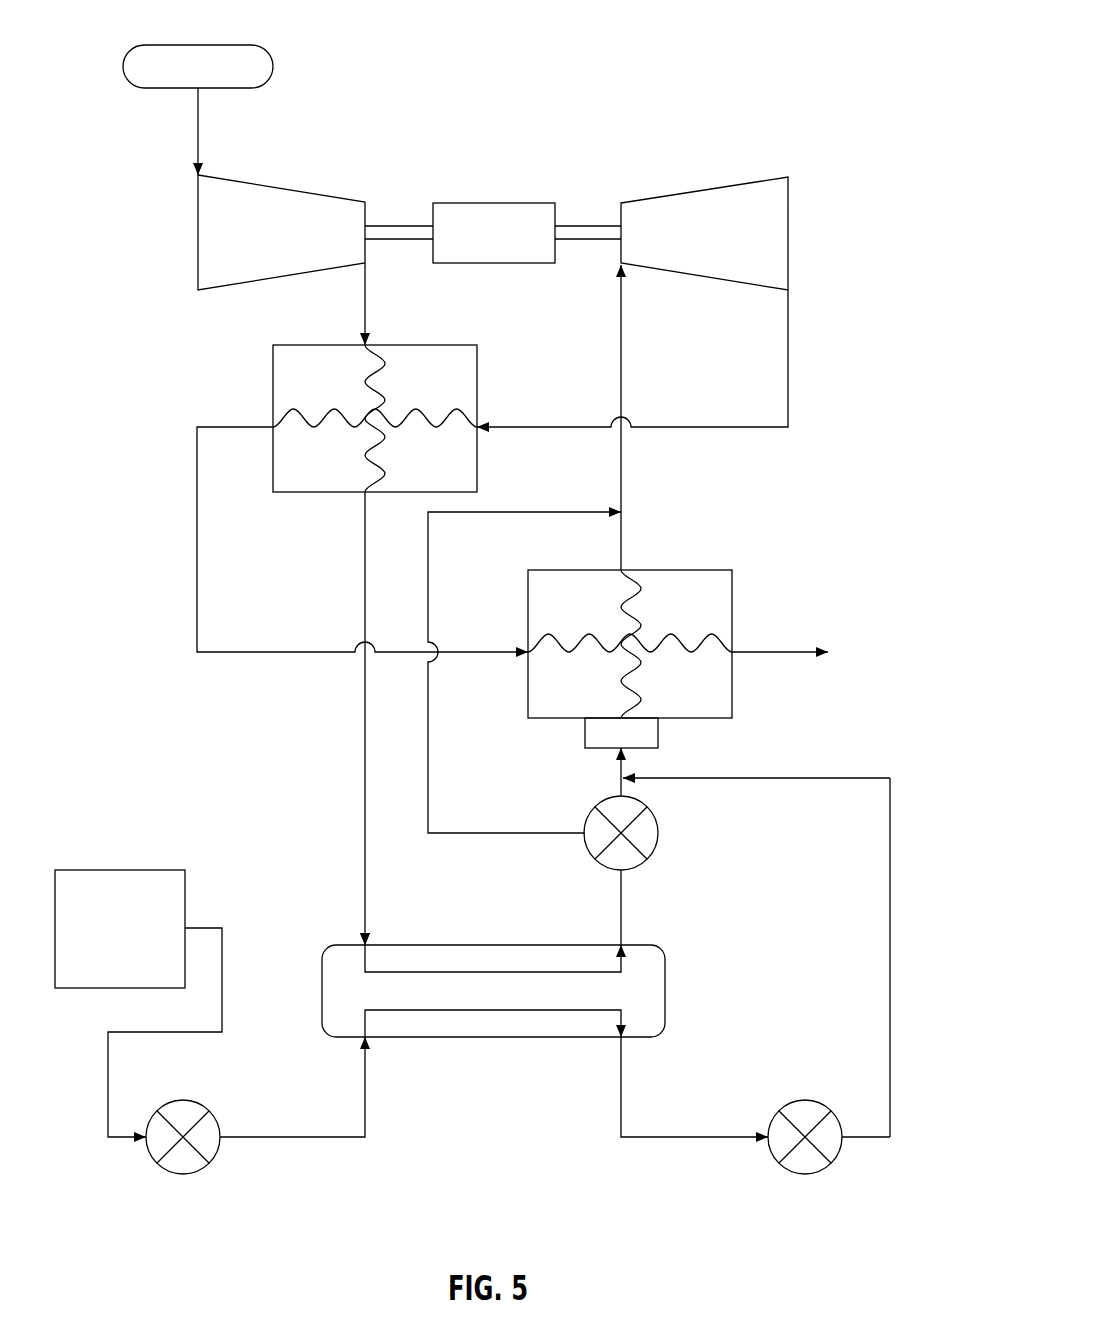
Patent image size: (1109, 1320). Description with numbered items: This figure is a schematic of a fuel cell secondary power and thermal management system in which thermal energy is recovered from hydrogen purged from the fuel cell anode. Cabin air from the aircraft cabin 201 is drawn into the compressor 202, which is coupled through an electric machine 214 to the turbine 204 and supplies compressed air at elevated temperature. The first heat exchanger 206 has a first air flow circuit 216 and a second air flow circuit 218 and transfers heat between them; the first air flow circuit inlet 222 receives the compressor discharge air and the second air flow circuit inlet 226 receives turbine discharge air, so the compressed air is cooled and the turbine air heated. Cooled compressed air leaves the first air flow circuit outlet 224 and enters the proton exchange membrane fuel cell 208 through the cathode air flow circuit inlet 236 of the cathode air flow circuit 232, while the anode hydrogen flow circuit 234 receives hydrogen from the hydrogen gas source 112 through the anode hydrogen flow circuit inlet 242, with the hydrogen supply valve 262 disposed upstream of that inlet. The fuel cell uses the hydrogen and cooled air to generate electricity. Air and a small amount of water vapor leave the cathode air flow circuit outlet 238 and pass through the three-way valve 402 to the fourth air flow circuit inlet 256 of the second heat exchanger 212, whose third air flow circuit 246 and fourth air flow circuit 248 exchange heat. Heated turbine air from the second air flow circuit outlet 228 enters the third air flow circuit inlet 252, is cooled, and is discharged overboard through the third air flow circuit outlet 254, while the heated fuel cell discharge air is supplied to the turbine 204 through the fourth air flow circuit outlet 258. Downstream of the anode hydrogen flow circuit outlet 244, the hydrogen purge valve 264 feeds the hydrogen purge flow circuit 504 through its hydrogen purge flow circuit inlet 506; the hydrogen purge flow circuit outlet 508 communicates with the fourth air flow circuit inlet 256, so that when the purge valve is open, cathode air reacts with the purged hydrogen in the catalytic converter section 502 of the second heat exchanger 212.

The hydrogen gas source 112 is at (108, 870).
The aircraft cabin 201 is at (166, 45).
The compressor 202 is at (198, 262).
The turbine 204 is at (788, 265).
The first heat exchanger 206 is at (307, 345).
The proton exchange membrane fuel cell 208 is at (338, 945).
The second heat exchanger 212 is at (562, 570).
The electric machine 214 is at (462, 203).
The first air flow circuit 216 is at (393, 391).
The second air flow circuit 218 is at (442, 432).
The first air flow circuit inlet 222 is at (370, 340).
The first air flow circuit outlet 224 is at (365, 492).
The second air flow circuit inlet 226 is at (477, 427).
The second air flow circuit outlet 228 is at (273, 427).
The cathode air flow circuit 232 is at (480, 972).
The anode hydrogen flow circuit 234 is at (480, 1010).
The cathode air flow circuit inlet 236 is at (367, 942).
The cathode air flow circuit outlet 238 is at (624, 942).
The anode hydrogen flow circuit inlet 242 is at (367, 1040).
The anode hydrogen flow circuit outlet 244 is at (624, 1040).
The third air flow circuit 246 is at (696, 656).
The fourth air flow circuit 248 is at (648, 620).
The third air flow circuit inlet 252 is at (528, 648).
The third air flow circuit outlet 254 is at (732, 648).
The fourth air flow circuit inlet 256 is at (612, 750).
The fourth air flow circuit outlet 258 is at (621, 570).
The hydrogen supply valve 262 is at (185, 1173).
The hydrogen purge valve 264 is at (800, 1175).
The 3-way valve 402 is at (585, 830).
The catalytic converter section 502 is at (658, 728).
The hydrogen purge flow circuit 504 is at (890, 918).
The hydrogen purge flow circuit inlet 506 is at (838, 1125).
The hydrogen purge flow circuit outlet 508 is at (700, 780).